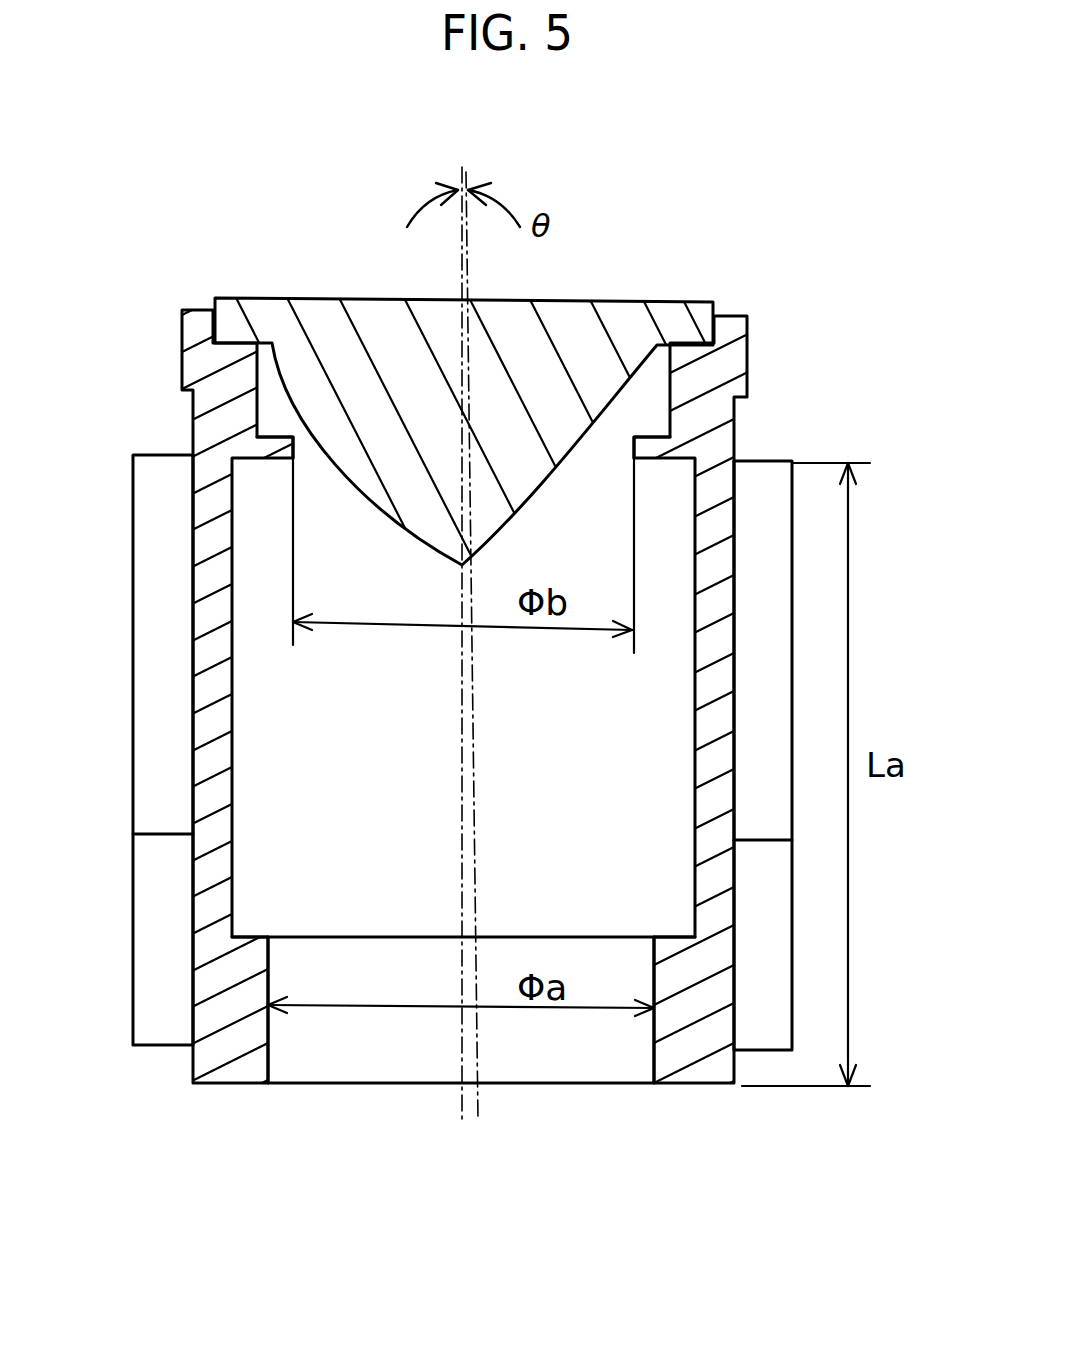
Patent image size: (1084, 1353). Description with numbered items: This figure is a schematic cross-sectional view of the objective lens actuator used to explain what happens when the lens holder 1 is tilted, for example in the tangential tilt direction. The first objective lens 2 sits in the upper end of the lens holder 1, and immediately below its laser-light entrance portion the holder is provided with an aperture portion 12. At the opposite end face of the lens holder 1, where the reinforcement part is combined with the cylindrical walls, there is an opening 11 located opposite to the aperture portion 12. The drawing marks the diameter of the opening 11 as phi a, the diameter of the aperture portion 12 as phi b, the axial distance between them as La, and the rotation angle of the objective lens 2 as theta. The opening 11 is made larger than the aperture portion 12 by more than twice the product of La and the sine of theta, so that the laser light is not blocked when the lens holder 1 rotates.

The lens holder 1 is at (220, 397).
The first objective lens 2 is at (553, 300).
The opening 11 is at (250, 1063).
The aperture portion 12 is at (273, 444).